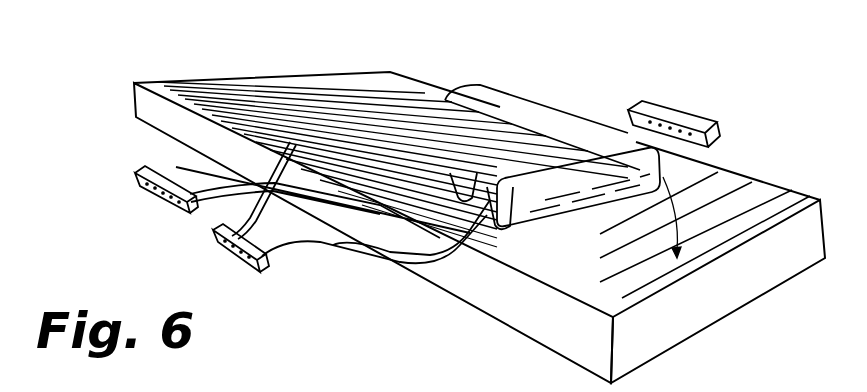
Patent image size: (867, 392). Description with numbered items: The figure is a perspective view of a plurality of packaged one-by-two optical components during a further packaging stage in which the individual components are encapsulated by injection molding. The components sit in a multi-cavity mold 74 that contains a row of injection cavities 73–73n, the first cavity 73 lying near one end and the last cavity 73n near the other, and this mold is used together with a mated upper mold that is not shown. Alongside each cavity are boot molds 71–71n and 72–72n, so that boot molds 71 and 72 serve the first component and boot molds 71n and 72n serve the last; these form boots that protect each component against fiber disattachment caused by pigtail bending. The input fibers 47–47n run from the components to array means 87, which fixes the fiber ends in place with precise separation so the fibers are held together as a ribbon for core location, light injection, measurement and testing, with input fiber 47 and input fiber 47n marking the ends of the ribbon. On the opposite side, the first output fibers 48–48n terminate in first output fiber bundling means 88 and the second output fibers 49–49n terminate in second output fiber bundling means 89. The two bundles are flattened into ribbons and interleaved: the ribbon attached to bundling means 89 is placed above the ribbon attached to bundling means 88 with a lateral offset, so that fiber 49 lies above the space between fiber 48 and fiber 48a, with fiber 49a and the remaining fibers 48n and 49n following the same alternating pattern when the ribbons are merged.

The multi-cavity mold 74 is at (246, 74).
The boot mold 71n is at (152, 82).
The boot mold 72n is at (364, 78).
The injection cavity 73n is at (307, 80).
The input fiber 47n is at (558, 107).
The input fiber 47 is at (668, 148).
The array means 87 is at (683, 110).
The first output fiber bundling means 88 is at (230, 262).
The second output fiber bundling means 89 is at (153, 198).
The second output fiber 49n is at (180, 167).
The first output fiber 48n is at (195, 220).
The first output fiber 48a is at (297, 253).
The second output fiber 49a is at (333, 245).
The first output fiber 48 is at (390, 267).
The second output fiber 49 is at (435, 250).
The boot mold 71 is at (600, 295).
The boot mold 72 is at (790, 195).
The injection cavity 73 is at (703, 240).